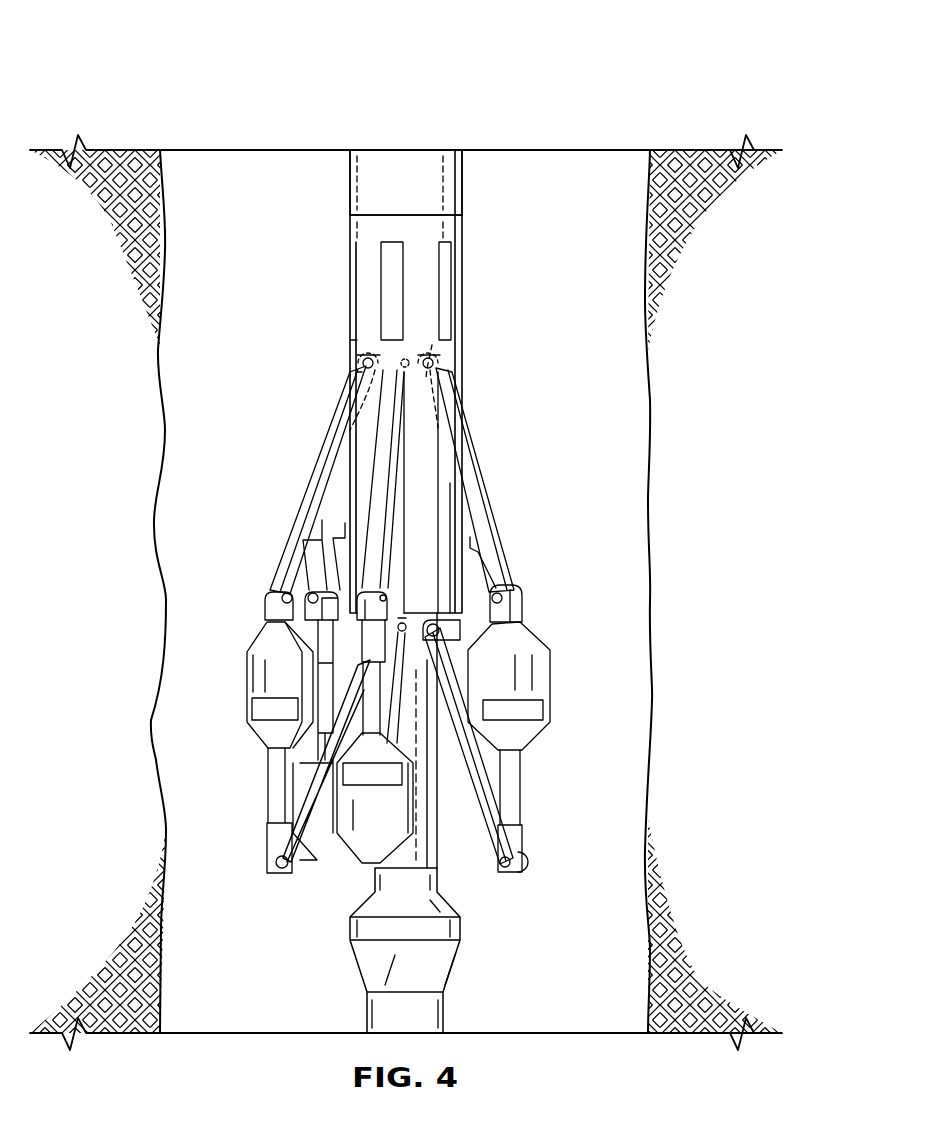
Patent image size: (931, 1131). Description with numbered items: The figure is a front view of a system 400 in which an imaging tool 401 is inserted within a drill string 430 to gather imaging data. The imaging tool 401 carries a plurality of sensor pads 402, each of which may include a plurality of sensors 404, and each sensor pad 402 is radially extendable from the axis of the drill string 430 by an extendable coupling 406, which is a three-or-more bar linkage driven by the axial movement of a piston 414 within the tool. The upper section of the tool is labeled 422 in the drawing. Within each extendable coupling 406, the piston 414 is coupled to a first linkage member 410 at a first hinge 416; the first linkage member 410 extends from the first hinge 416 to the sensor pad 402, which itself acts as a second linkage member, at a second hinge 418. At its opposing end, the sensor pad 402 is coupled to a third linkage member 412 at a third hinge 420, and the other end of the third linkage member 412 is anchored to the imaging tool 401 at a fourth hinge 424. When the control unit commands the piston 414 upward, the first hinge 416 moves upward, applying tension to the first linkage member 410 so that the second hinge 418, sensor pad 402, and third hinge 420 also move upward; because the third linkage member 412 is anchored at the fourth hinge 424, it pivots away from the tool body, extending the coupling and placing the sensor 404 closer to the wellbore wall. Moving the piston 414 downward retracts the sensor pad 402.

The system 400 is at (210, 68).
The drill string 430 is at (490, 175).
The imaging tool 401 is at (420, 264).
The upper sub 422 is at (350, 192).
The piston 414 is at (397, 341).
The first hinge 416 is at (440, 336).
The extendable coupling 406 is at (526, 507).
The first linkage member 410 is at (476, 443).
The second hinge 418 is at (500, 583).
The fourth hinge 424 is at (438, 632).
The third linkage member 412 is at (476, 800).
The third hinge 420 is at (504, 872).
The sensor pad 402 is at (550, 668).
The sensor 404 is at (525, 712).